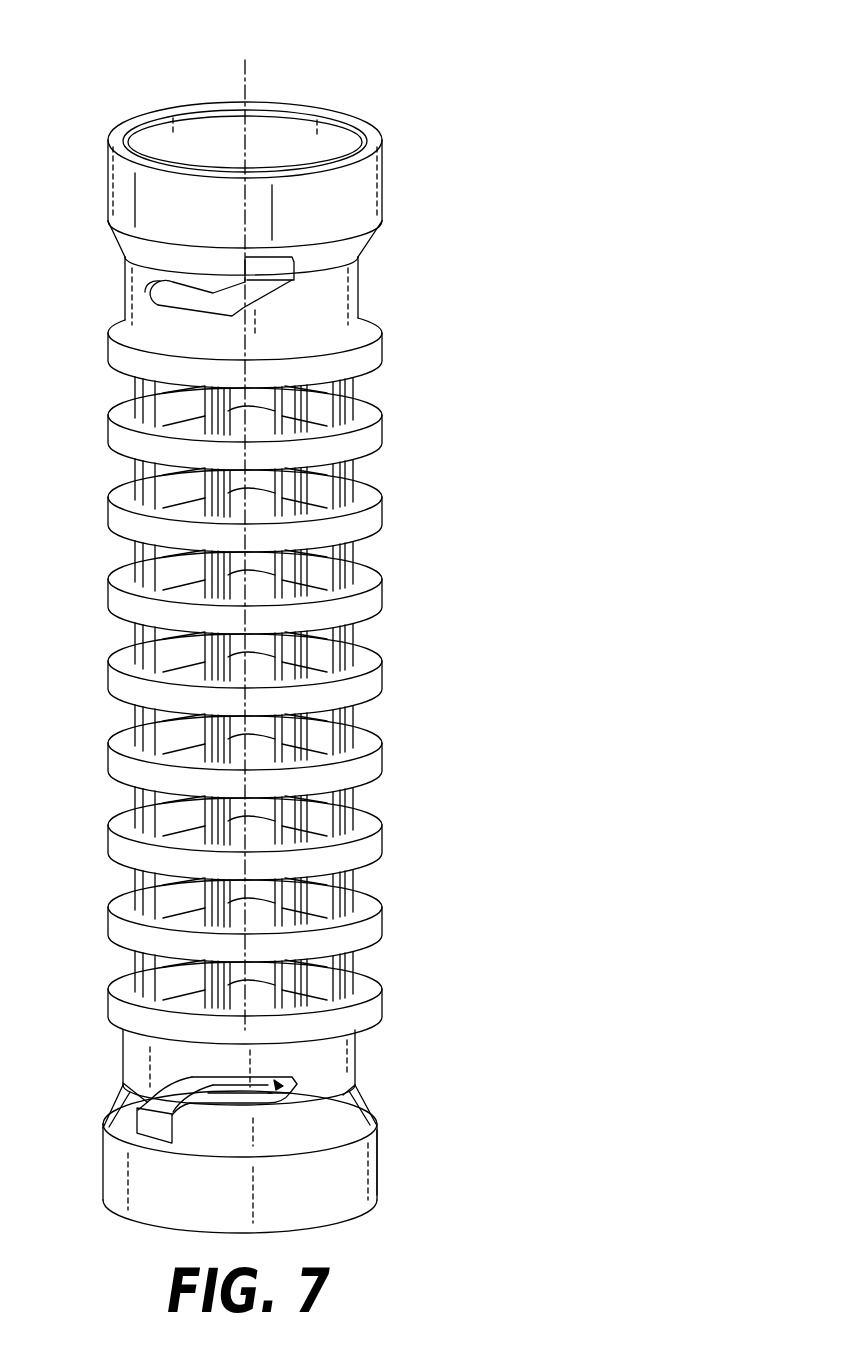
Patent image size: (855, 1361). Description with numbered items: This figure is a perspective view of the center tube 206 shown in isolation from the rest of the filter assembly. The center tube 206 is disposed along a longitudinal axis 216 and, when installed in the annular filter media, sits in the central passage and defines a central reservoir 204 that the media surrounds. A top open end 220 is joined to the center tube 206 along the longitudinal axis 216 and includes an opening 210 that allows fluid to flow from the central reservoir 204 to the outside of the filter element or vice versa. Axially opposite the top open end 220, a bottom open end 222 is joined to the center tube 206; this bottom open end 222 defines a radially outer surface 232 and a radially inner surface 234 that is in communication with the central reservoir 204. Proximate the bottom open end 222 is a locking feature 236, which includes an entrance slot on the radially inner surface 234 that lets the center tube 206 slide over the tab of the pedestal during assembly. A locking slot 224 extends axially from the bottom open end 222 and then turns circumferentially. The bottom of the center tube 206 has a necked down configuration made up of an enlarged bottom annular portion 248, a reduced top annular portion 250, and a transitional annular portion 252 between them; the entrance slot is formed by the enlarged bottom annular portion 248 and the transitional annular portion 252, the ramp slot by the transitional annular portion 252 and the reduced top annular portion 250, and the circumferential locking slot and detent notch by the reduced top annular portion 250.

The center tube 206 is at (337, 56).
The opening 210 is at (215, 140).
The top open end 220 is at (269, 98).
The longitudinal axis 216 is at (247, 128).
The locking feature 236 is at (276, 273).
The locking slot 224 is at (167, 292).
The radially inner surface 234 is at (193, 1085).
The central reservoir 204 is at (257, 810).
The reduced top annular portion 250 is at (356, 1101).
The transitional annular portion 252 is at (356, 1127).
The radially outer surface 232 is at (350, 1160).
The enlarged bottom annular portion 248 is at (357, 1197).
The bottom open end 222 is at (338, 1228).